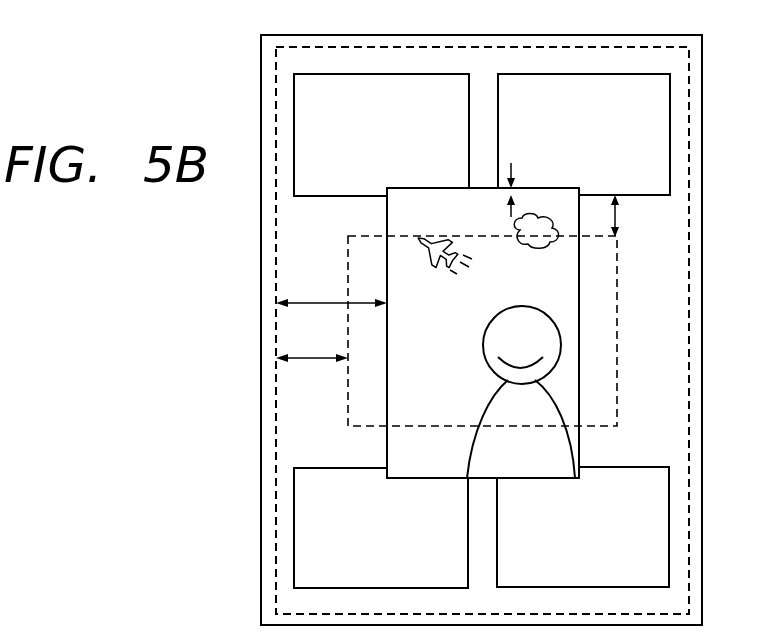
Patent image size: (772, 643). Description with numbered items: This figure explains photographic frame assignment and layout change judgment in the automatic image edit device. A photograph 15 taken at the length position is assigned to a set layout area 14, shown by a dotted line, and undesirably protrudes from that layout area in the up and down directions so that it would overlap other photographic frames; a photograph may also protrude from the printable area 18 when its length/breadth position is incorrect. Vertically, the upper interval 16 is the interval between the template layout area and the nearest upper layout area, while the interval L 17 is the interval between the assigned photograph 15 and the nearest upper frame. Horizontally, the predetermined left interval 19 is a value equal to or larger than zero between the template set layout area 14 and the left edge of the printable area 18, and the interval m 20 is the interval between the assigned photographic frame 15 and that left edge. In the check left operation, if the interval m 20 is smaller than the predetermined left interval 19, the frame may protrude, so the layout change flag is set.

The layout area 14 is at (618, 399).
The photograph 15 is at (580, 337).
The interval L0 16 is at (622, 218).
The interval L 17 is at (563, 188).
The printable area 18 is at (690, 448).
The interval m0 19 is at (313, 362).
The interval m 20 is at (313, 300).